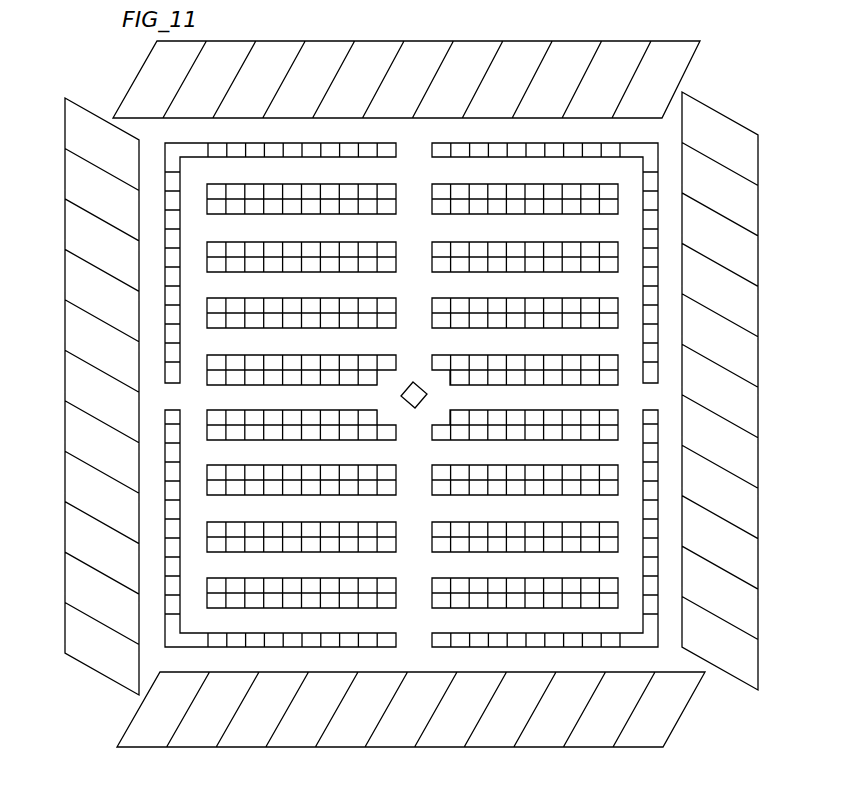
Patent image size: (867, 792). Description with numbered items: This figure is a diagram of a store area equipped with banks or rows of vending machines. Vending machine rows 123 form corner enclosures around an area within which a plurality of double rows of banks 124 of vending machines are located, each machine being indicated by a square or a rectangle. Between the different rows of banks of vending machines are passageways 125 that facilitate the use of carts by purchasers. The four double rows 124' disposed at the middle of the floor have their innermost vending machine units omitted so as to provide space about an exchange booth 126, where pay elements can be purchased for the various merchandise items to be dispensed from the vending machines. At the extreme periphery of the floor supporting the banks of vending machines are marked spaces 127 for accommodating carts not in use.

The marked spaces 127 is at (437, 39).
The vending machine rows 123 is at (202, 145).
The passageways 125 is at (293, 179).
The double rows of banks of vending machines 124 is at (412, 580).
The four double rows 124' is at (412, 397).
The exchange booth 126 is at (426, 397).